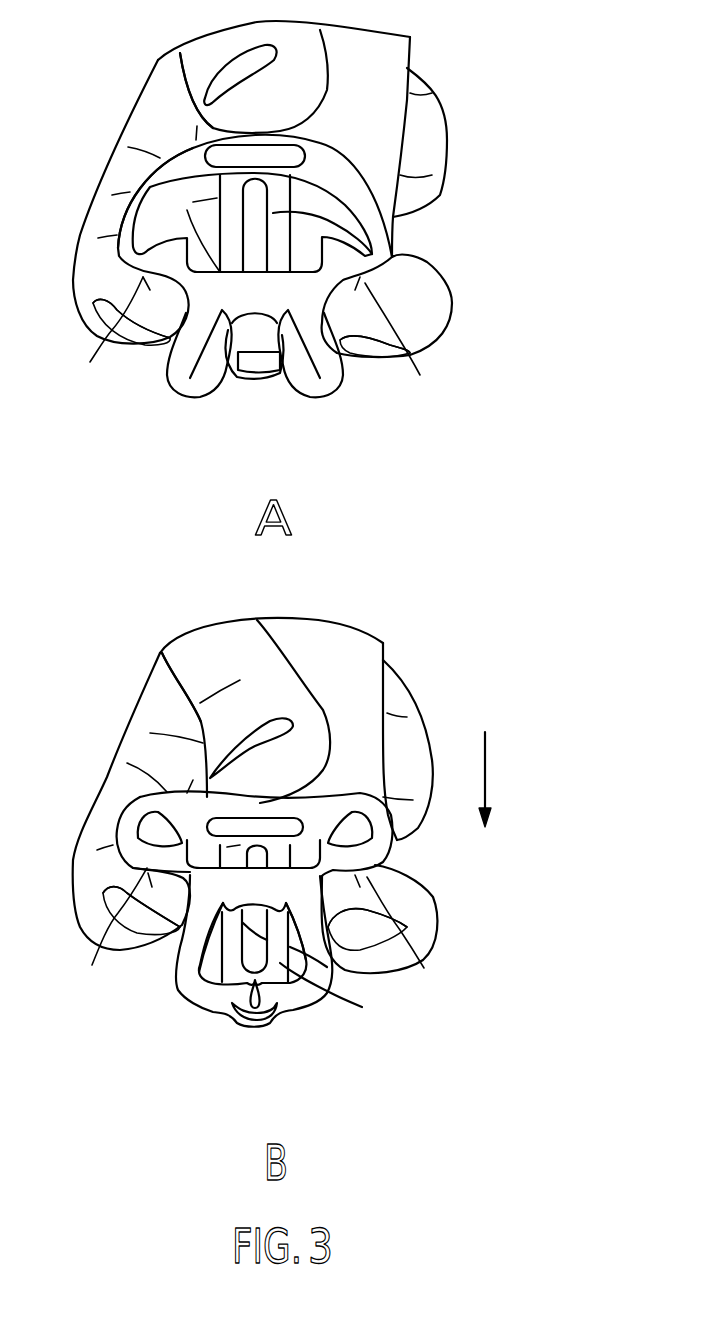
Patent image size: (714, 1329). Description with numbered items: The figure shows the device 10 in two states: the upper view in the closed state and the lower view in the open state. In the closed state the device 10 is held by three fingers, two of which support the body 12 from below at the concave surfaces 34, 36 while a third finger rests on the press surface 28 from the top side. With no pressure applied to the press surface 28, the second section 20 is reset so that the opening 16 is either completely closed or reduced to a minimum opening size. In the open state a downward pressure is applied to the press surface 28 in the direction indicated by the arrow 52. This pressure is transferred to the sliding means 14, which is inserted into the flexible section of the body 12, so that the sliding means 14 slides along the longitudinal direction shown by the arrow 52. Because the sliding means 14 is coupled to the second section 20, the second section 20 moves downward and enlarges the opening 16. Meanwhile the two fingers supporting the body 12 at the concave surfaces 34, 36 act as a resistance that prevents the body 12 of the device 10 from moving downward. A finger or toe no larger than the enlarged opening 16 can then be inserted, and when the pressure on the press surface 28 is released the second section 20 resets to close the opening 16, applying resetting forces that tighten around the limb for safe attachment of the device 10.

The device 10 is at (152, 377).
The body 12 is at (152, 178).
The sliding means 14 is at (392, 230).
The opening 16 is at (232, 380).
The second section 20 is at (278, 380).
The press surface 28 is at (193, 140).
The concave surface 34 is at (90, 362).
The concave surface 36 is at (420, 375).
The arrow 52 is at (487, 771).